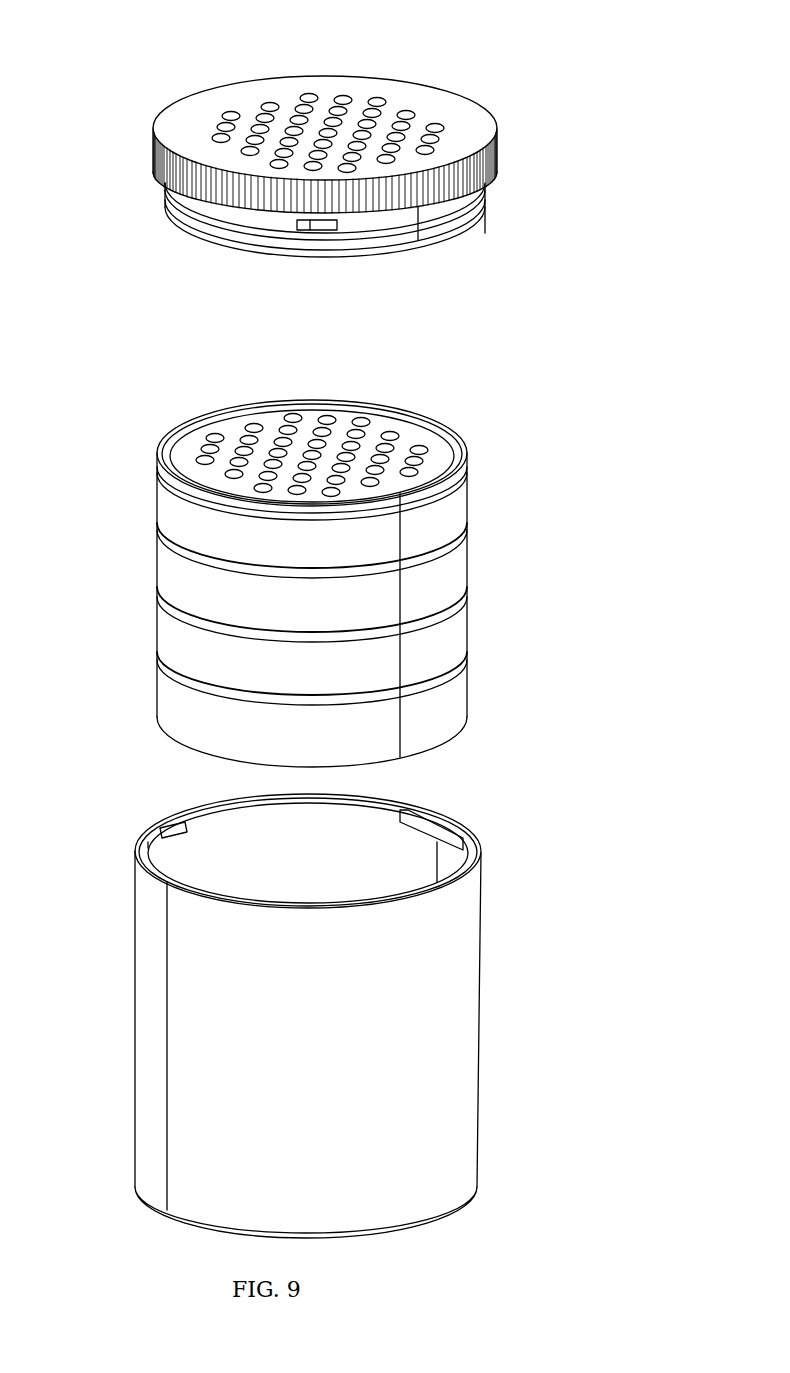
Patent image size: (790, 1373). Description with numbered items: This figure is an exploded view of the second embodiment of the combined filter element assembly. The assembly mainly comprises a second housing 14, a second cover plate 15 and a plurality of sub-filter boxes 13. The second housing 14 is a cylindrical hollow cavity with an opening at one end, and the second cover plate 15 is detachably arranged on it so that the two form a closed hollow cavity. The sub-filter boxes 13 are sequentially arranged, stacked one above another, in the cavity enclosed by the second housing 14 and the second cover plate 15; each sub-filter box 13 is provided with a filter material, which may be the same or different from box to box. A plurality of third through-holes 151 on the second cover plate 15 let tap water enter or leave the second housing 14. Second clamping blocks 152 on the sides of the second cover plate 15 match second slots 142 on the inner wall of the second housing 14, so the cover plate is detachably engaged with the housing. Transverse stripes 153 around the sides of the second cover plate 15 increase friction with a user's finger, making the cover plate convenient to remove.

The second cover plate 15 is at (285, 172).
The third through-holes 151 is at (372, 112).
The second clamping blocks 152 is at (317, 231).
The transverse stripes 153 is at (197, 183).
The sub-filter boxes 13 is at (200, 533).
The second housing 14 is at (259, 1005).
The second slots 142 is at (160, 830).